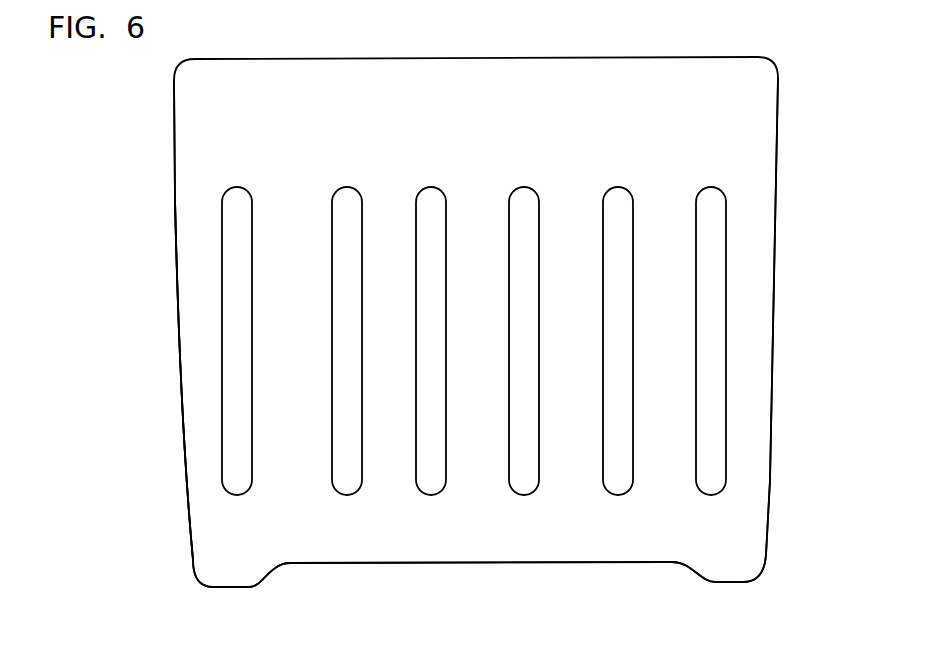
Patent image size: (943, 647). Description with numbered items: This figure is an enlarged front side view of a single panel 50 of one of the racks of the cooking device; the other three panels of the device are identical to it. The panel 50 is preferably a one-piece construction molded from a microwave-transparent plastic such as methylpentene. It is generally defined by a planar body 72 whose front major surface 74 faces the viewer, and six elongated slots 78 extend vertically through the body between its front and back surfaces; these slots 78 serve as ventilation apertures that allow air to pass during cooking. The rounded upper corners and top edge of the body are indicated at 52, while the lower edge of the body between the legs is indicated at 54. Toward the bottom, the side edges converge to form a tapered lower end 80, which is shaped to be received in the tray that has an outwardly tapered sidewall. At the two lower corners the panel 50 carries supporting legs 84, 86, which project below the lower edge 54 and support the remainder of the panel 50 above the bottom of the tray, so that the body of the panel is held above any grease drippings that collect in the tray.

The panel 50 is at (160, 280).
The body / main plate 52 is at (500, 59).
The bottom edge 54 is at (498, 563).
The planar body 72 is at (178, 388).
The front major surface 74 is at (383, 117).
The elongated slots 78 is at (235, 184).
The tapered lower end 80 is at (190, 508).
The supporting leg 84 is at (225, 587).
The supporting leg 86 is at (728, 582).